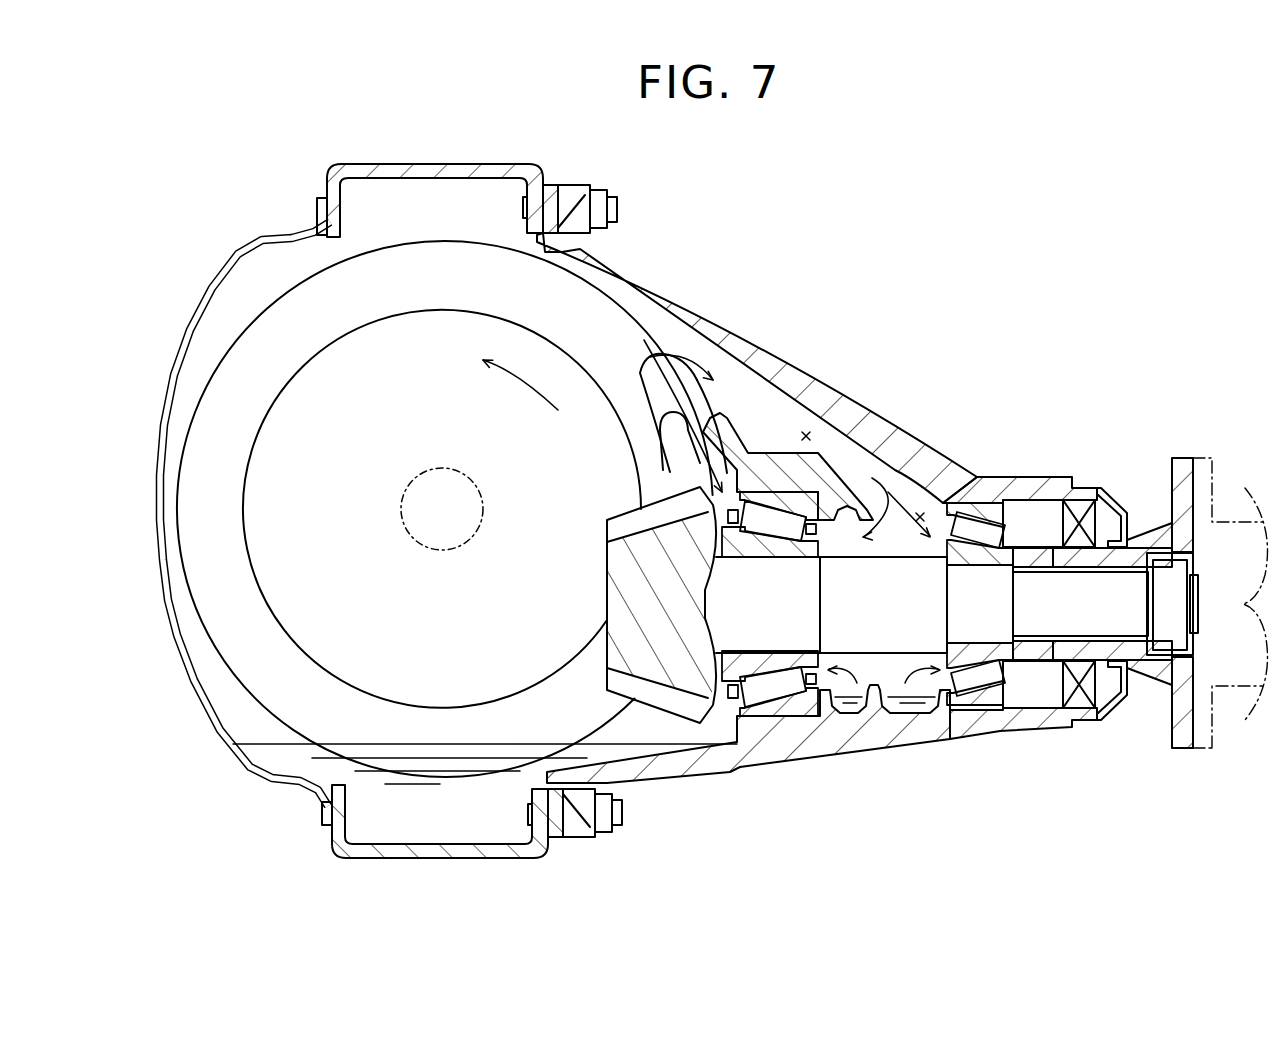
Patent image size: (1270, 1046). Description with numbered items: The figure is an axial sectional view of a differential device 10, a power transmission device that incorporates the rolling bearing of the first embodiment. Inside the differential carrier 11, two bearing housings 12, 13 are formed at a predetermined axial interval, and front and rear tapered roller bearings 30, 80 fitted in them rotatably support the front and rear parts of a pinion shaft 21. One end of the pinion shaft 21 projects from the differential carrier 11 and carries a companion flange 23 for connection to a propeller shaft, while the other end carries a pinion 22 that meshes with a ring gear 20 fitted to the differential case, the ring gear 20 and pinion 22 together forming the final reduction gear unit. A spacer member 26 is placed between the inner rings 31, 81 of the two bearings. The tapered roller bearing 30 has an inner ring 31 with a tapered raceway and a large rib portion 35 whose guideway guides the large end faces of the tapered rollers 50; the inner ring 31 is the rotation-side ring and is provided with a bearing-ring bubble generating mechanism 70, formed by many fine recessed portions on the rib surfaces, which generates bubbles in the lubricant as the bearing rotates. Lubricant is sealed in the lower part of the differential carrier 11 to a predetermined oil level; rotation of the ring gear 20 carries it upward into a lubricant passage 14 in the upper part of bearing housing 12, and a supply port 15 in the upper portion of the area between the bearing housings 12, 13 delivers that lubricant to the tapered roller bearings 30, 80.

The differential device 10 is at (888, 275).
The differential carrier 11 is at (727, 332).
The bearing housing 12 is at (962, 480).
The bearing housing 13 is at (774, 452).
The lubricant passage 14 is at (806, 432).
The supply port 15 is at (921, 512).
The ring gear 20 is at (597, 314).
The pinion shaft 21 is at (900, 634).
The pinion 22 is at (606, 580).
The companion flange 23 is at (1172, 490).
The spacer member 26 is at (863, 662).
The tapered roller bearing 30 is at (1018, 517).
The inner ring 31 is at (992, 553).
The large rib portion 35 is at (1013, 545).
The tapered rollers 50 is at (973, 540).
The bearing-ring bubble generating mechanism 70 is at (1033, 533).
The tapered roller bearing 80 is at (739, 710).
The inner ring 81 is at (760, 550).